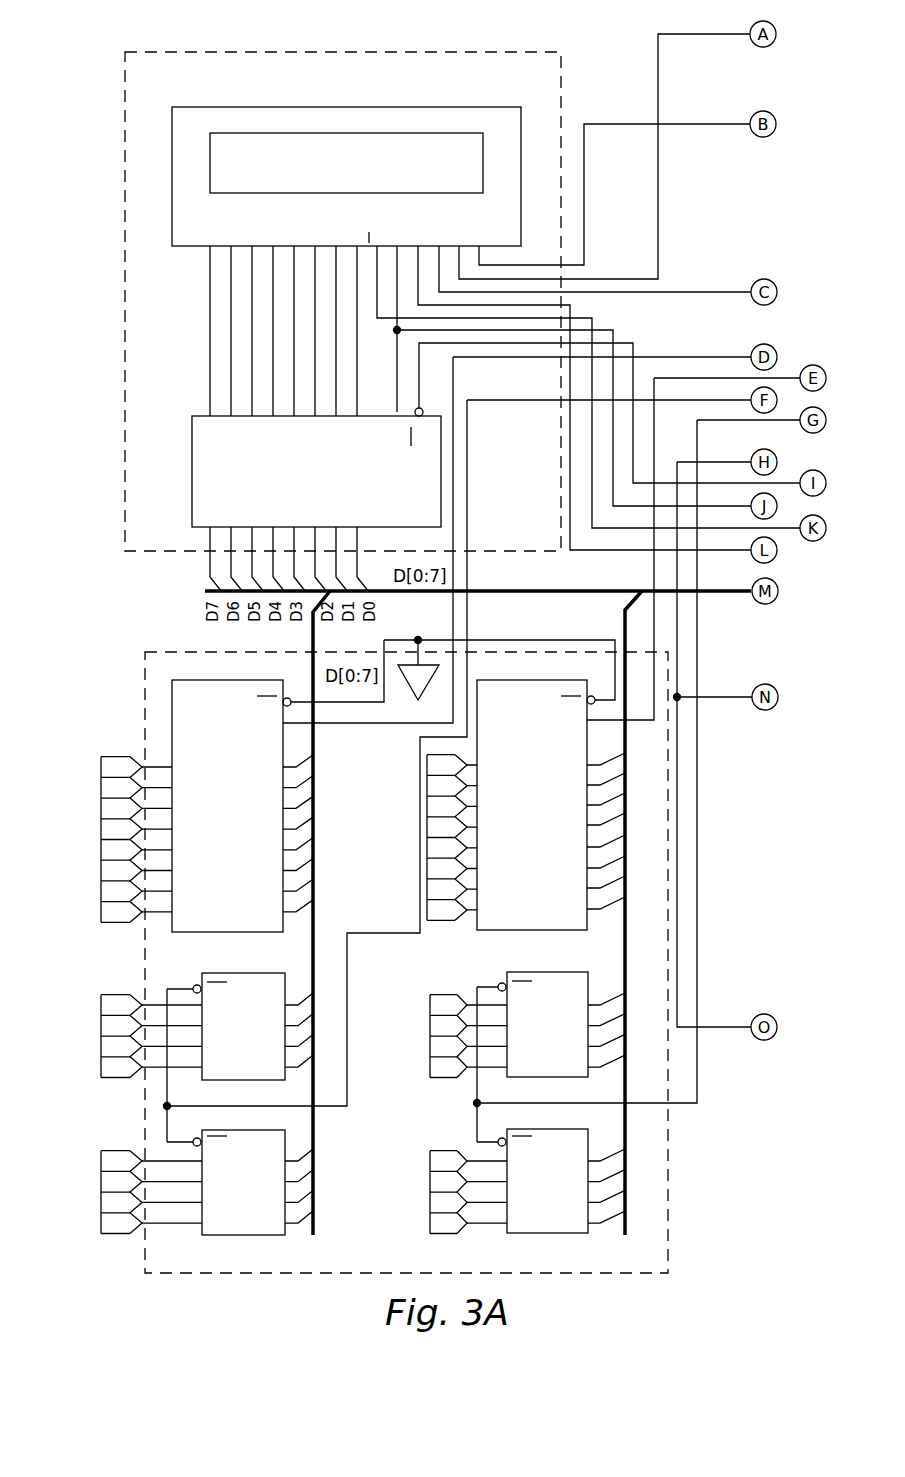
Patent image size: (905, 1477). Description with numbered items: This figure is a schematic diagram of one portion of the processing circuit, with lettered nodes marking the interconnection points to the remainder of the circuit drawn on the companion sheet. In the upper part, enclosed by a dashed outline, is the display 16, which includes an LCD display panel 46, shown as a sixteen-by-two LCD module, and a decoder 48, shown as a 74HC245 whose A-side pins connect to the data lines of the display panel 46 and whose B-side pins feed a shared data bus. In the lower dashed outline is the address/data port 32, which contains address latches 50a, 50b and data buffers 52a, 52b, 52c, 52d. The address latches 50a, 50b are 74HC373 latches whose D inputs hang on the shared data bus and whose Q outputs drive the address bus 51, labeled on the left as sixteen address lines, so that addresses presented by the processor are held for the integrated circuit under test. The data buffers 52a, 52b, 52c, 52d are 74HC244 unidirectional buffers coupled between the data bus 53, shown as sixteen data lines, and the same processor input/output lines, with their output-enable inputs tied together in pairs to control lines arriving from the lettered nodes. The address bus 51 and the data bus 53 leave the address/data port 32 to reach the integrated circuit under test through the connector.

The display 16 is at (340, 52).
The LCD display panel 46 is at (185, 215).
The decoder 48 is at (437, 455).
The address latch 50a is at (185, 690).
The address latch 50b is at (530, 695).
The address bus 51 is at (108, 755).
The data buffer 52a is at (275, 990).
The data buffer 52b is at (275, 1143).
The data buffer 52c is at (550, 978).
The data buffer 52d is at (555, 1135).
The data bus 53 is at (112, 1141).
The address/data port 32 is at (668, 1172).